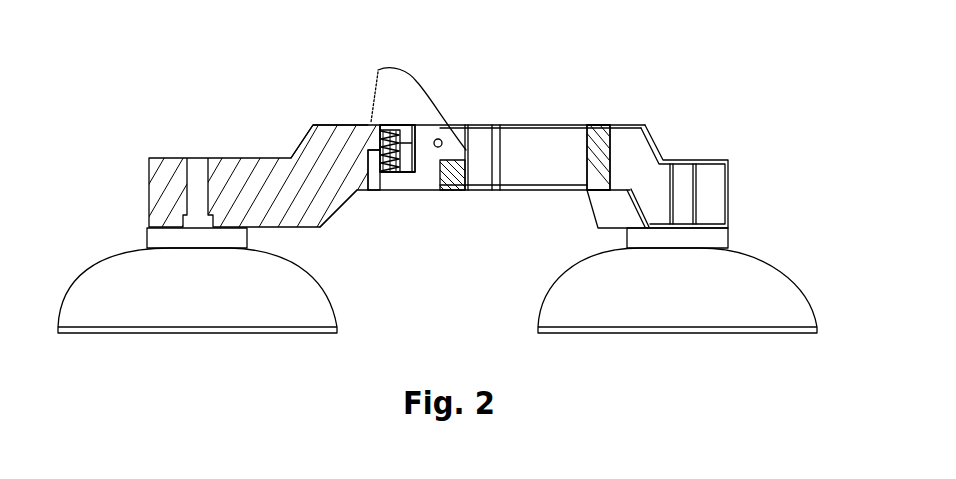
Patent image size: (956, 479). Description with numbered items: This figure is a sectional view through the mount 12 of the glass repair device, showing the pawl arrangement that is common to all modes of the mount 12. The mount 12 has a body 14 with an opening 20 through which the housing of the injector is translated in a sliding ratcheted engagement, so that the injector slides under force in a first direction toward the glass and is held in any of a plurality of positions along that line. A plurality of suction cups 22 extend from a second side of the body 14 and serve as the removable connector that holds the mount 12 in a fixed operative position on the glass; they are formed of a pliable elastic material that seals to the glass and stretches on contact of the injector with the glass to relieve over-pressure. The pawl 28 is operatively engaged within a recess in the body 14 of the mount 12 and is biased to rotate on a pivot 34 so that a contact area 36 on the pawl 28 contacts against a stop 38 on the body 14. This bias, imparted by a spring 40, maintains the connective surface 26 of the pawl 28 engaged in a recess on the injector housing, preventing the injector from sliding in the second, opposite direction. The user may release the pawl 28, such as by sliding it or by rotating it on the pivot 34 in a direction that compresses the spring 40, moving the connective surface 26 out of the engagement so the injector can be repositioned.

The mount 12 is at (150, 157).
The body 14 is at (297, 168).
The opening 20 is at (482, 147).
The suction cups 22 is at (75, 303).
The connective surface 26 is at (467, 160).
The pawl 28 is at (378, 70).
The pivot 34 is at (436, 148).
The contact area 36 is at (397, 122).
The stop 38 is at (388, 125).
The spring 40 is at (377, 153).